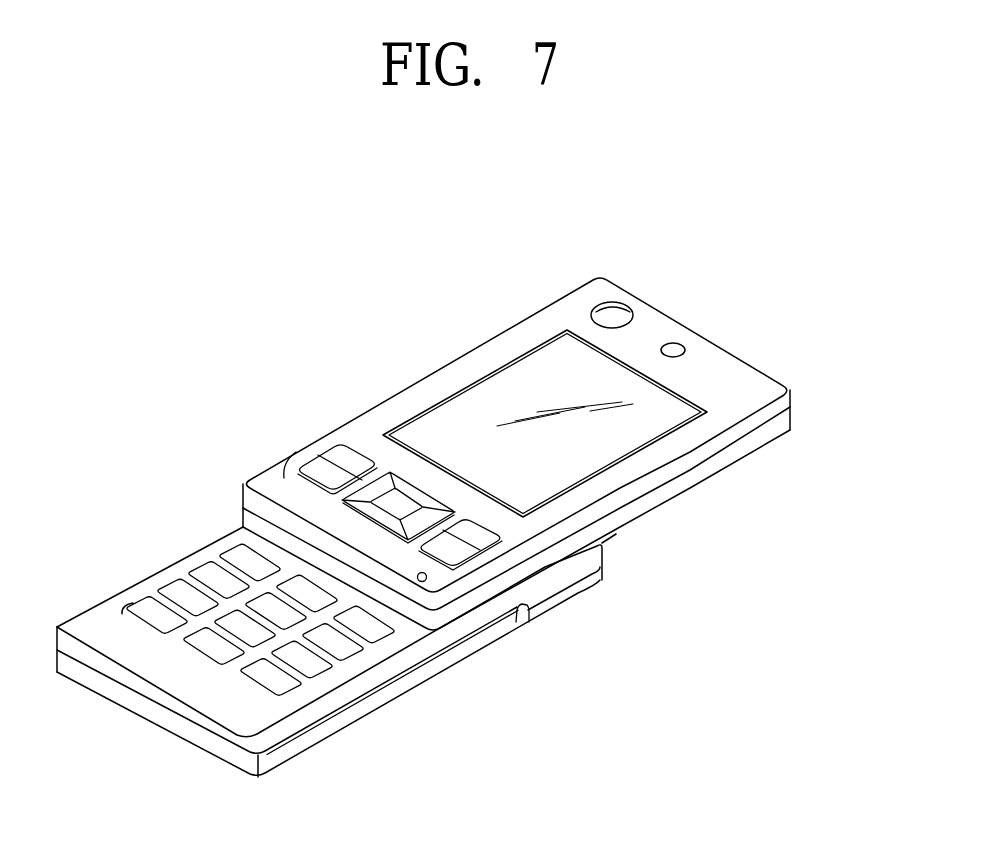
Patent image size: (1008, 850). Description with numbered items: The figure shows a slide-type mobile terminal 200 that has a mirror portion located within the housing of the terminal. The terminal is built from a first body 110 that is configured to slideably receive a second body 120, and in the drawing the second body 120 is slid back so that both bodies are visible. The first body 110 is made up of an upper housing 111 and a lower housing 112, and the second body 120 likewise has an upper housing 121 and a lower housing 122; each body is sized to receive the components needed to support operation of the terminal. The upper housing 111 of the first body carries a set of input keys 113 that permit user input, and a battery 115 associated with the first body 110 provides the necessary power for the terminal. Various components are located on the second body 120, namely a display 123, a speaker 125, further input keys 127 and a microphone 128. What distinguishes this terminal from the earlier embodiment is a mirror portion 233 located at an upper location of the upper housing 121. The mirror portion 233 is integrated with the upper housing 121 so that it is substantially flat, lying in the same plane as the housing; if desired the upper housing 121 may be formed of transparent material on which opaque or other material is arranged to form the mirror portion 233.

The mobile terminal 200 is at (373, 243).
The first body 110 is at (573, 613).
The upper housing 111 is at (603, 545).
The lower housing 112 is at (603, 568).
The input keys 113 is at (175, 578).
The battery 115 is at (370, 700).
The second body 120 is at (786, 463).
The upper housing 121 is at (790, 397).
The lower housing 122 is at (790, 423).
The display 123 is at (518, 380).
The speaker 125 is at (673, 343).
The input keys 127 is at (312, 445).
The microphone 128 is at (428, 578).
The mirror portion 233 is at (601, 302).